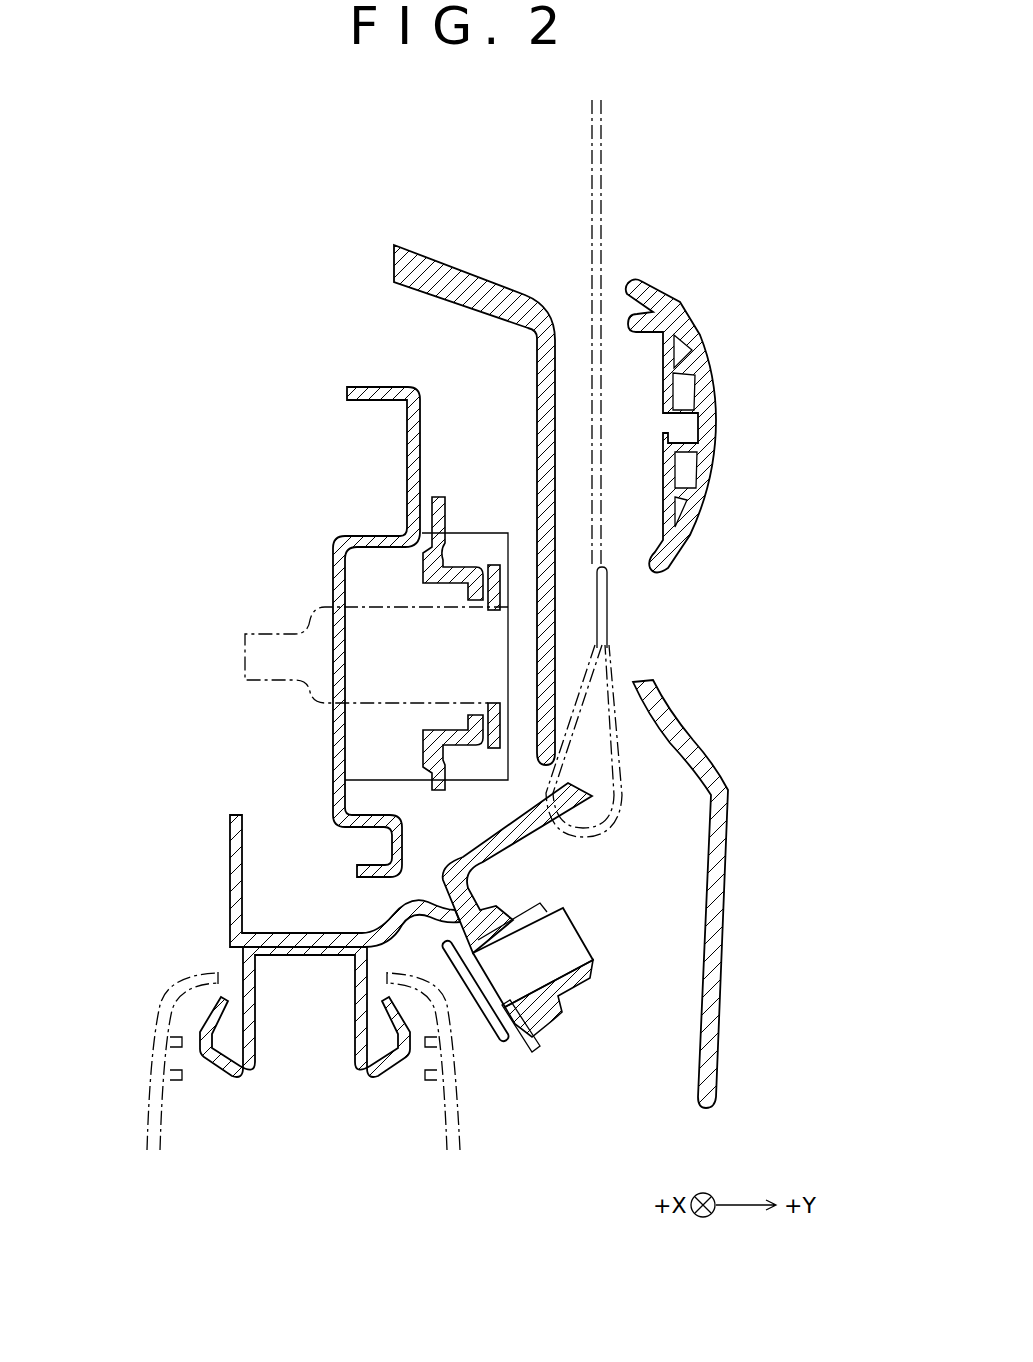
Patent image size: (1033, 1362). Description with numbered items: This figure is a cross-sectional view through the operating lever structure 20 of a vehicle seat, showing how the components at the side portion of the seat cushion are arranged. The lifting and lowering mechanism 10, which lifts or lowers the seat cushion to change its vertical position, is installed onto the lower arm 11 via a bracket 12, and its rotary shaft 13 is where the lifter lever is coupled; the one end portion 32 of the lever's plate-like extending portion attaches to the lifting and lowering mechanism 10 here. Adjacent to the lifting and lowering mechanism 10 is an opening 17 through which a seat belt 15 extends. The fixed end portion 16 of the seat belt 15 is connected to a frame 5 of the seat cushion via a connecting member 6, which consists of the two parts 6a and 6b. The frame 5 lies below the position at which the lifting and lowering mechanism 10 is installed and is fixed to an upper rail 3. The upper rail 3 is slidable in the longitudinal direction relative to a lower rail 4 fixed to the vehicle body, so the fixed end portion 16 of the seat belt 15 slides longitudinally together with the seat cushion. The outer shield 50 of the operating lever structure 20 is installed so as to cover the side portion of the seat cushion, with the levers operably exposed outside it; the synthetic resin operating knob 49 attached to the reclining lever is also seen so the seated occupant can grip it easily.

The upper rail 3 is at (207, 1037).
The lower rail 4 is at (150, 1097).
The frame 5 is at (230, 860).
The connecting member 6 is at (528, 1042).
The connecting member part 6a is at (533, 1010).
The connecting member part 6b is at (494, 1038).
The lifting and lowering mechanism 10 is at (344, 632).
The lower arm 11 is at (410, 462).
The bracket 12 is at (423, 738).
The rotary shaft 13 is at (287, 637).
The seat belt 15 is at (602, 215).
The fixed end portion 16 is at (603, 832).
The opening 17 is at (572, 275).
The operating lever structure 20 is at (712, 377).
The one end portion 32 is at (502, 582).
The operating knob 49 is at (710, 383).
The outer shield 50 is at (714, 1017).